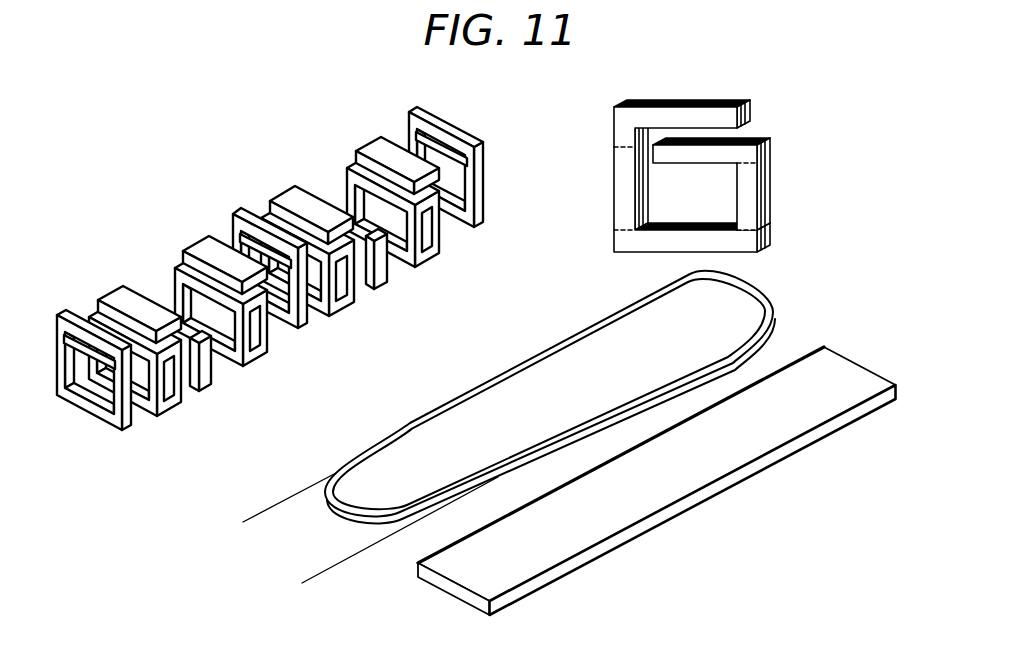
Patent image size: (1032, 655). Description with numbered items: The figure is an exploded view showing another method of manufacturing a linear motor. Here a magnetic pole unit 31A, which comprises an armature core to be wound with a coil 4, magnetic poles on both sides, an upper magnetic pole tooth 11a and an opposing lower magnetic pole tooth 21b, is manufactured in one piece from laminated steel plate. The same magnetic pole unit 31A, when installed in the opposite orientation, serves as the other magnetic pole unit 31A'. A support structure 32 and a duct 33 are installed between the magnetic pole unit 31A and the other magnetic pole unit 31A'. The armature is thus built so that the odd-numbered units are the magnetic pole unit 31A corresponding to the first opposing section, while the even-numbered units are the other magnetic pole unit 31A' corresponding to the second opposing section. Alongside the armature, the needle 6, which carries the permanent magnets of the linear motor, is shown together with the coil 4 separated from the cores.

The support structure 32 is at (56, 320).
The magnetic pole unit 31A is at (160, 380).
The other magnetic pole unit 31A' is at (262, 318).
The duct 33 is at (215, 381).
The coil 4 is at (347, 515).
The needle 6 is at (432, 592).
The upper magnetic pole tooth 11a is at (708, 113).
The lower magnetic pole tooth 21b is at (733, 152).